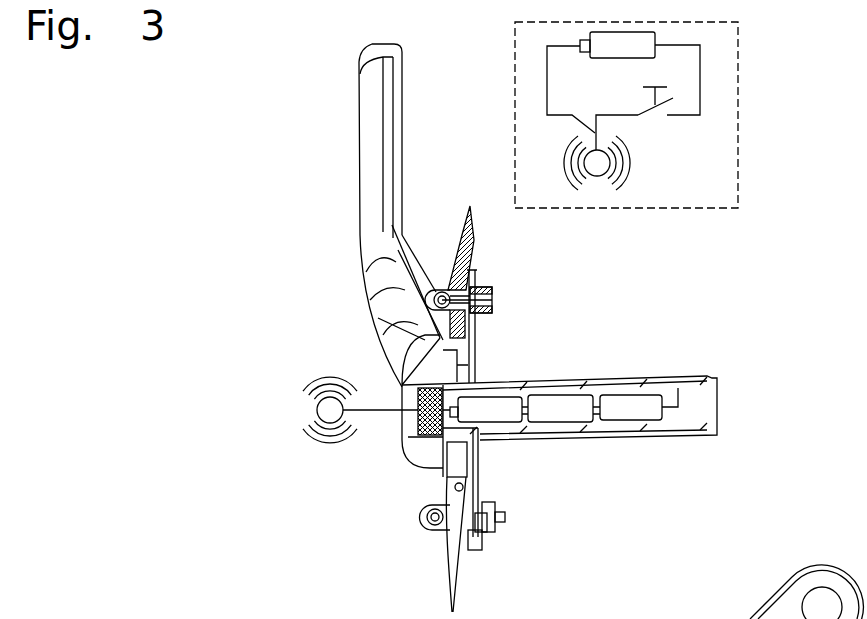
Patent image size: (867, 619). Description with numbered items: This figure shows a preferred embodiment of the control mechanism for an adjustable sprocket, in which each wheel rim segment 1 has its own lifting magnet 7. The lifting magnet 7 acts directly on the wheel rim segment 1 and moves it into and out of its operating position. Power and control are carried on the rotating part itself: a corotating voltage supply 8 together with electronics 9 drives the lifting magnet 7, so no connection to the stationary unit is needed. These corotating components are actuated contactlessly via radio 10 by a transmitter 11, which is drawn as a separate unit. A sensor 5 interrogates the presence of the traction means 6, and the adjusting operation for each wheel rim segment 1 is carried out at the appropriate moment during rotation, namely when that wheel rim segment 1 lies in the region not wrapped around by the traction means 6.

The wheel rim segment 1 is at (455, 272).
The sensor 5 is at (485, 523).
The traction means 6 is at (482, 542).
The lifting magnet 7 is at (480, 300).
The voltage supply 8 is at (497, 412).
The electronics 9 is at (418, 392).
The radio 10 is at (330, 410).
The transmitter 11 is at (738, 85).